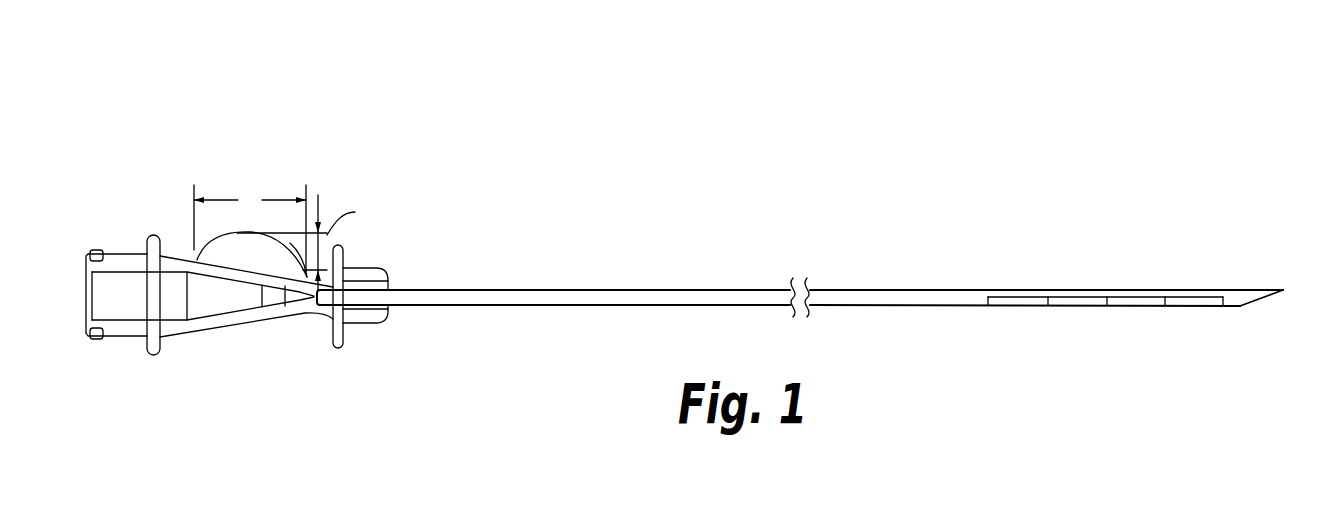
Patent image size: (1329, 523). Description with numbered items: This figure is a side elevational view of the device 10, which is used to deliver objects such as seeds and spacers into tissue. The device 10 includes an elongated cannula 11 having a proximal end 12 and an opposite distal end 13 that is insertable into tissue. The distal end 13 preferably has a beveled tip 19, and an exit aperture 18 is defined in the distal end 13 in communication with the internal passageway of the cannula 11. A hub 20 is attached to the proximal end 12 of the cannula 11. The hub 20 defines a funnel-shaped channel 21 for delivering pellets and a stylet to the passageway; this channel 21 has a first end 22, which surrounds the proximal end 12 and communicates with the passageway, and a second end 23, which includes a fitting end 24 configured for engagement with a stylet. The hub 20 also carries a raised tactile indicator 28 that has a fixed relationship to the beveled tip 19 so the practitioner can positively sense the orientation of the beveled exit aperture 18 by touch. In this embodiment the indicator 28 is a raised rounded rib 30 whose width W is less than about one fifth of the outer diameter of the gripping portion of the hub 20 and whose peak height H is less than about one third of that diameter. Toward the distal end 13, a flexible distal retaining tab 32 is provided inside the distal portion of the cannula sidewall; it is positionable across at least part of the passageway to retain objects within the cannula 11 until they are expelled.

The device 10 is at (998, 205).
The cannula 11 is at (713, 290).
The proximal end 12 is at (413, 289).
The distal end 13 is at (1263, 291).
The exit aperture 18 is at (1255, 303).
The beveled tip 19 is at (1287, 290).
The hub 20 is at (395, 355).
The funnel-shaped channel 21 is at (138, 292).
The first end 22 is at (390, 326).
The second end 23 is at (86, 292).
The fitting end 24 is at (90, 343).
The raised tactile indicator 28 is at (255, 225).
The raised rounded rib 30 is at (224, 233).
The distal retaining tab 32 is at (1231, 293).